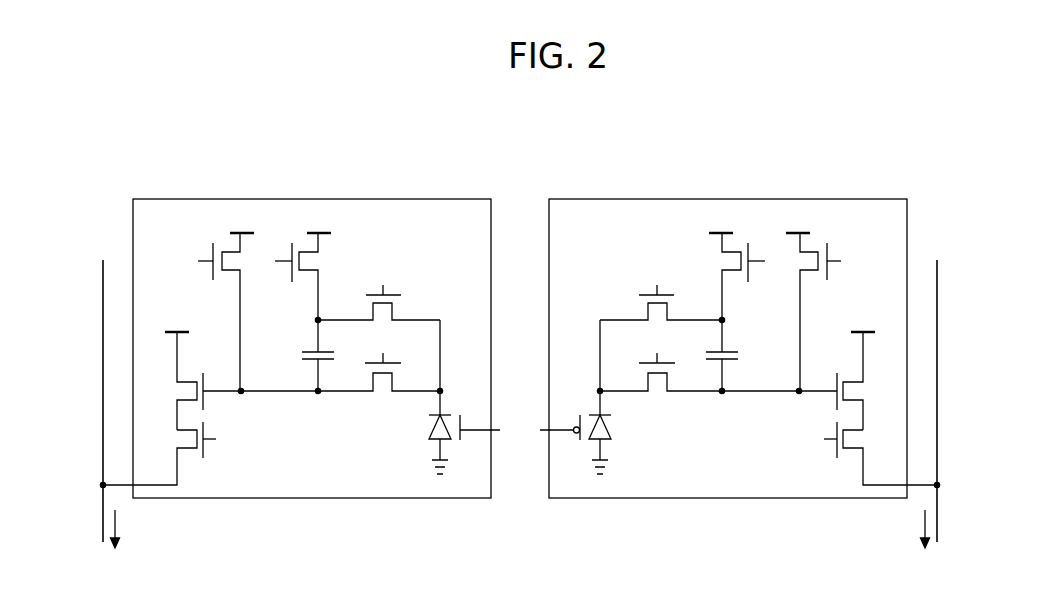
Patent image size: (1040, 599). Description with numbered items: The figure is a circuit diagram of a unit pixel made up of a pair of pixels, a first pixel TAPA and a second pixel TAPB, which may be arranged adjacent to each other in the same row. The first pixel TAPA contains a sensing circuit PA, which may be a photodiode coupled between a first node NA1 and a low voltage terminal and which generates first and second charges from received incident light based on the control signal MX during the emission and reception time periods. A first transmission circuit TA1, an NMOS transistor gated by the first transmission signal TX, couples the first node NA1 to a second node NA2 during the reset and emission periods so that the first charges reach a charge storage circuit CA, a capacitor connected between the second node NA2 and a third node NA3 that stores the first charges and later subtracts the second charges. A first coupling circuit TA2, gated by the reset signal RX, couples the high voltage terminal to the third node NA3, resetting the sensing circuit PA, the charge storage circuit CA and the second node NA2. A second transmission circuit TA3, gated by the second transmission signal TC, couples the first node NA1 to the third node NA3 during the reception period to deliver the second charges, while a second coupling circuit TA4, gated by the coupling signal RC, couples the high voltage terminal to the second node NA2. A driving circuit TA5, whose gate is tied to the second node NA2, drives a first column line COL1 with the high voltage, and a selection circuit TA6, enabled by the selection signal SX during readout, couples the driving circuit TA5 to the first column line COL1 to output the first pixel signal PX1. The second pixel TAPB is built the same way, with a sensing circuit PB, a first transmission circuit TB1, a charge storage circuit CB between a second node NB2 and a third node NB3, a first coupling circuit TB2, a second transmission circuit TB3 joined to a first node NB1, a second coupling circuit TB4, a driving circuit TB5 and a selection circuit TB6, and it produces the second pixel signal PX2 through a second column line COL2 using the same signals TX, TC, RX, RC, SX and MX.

The first pixel TAPA is at (433, 199).
The second pixel TAPB is at (851, 199).
The first transmission circuit TA1 is at (321, 392).
The first coupling circuit TA2 is at (325, 292).
The second transmission circuit TA3 is at (379, 308).
The second coupling circuit TA4 is at (229, 312).
The driving circuit TA5 is at (172, 381).
The selection circuit TA6 is at (153, 453).
The first transmission circuit TB1 is at (718, 392).
The first coupling circuit TB2 is at (715, 292).
The second transmission circuit TB3 is at (661, 308).
The second coupling circuit TB4 is at (810, 312).
The driving circuit TB5 is at (867, 381).
The selection circuit TB6 is at (887, 453).
The first node NA1 is at (457, 367).
The second node NA2 is at (285, 405).
The third node NA3 is at (335, 310).
The first node NB1 is at (583, 367).
The second node NB2 is at (754, 405).
The third node NB3 is at (705, 310).
The charge storage circuit CA is at (303, 366).
The charge storage circuit CB is at (737, 366).
The sensing circuit PA is at (425, 444).
The sensing circuit PB is at (614, 444).
The coupling signal RC is at (521, 262).
The reset signal RX is at (520, 262).
The second transmission signal TC is at (519, 276).
The first transmission signal TX is at (519, 345).
The selection signal SX is at (520, 440).
The control signal MX is at (520, 430).
The first column line COL1 is at (103, 400).
The second column line COL2 is at (940, 400).
The first pixel signal PX1 is at (134, 529).
The second pixel signal PX2 is at (906, 529).